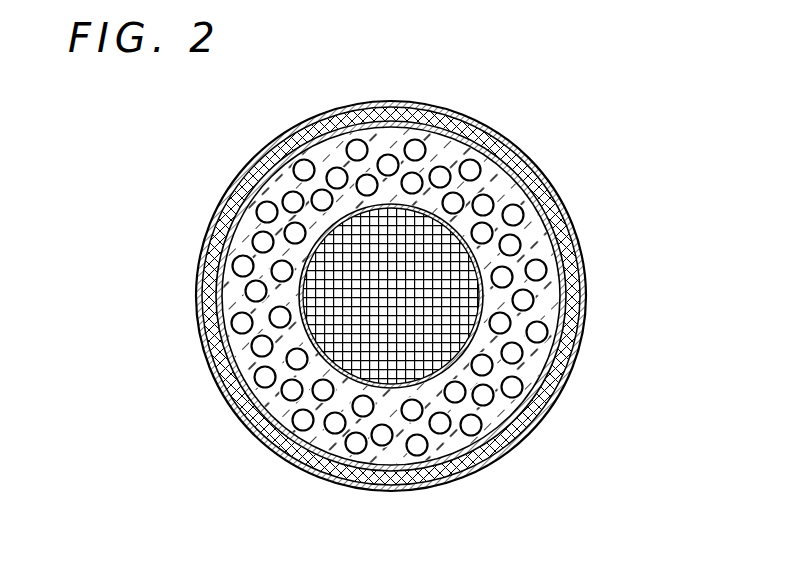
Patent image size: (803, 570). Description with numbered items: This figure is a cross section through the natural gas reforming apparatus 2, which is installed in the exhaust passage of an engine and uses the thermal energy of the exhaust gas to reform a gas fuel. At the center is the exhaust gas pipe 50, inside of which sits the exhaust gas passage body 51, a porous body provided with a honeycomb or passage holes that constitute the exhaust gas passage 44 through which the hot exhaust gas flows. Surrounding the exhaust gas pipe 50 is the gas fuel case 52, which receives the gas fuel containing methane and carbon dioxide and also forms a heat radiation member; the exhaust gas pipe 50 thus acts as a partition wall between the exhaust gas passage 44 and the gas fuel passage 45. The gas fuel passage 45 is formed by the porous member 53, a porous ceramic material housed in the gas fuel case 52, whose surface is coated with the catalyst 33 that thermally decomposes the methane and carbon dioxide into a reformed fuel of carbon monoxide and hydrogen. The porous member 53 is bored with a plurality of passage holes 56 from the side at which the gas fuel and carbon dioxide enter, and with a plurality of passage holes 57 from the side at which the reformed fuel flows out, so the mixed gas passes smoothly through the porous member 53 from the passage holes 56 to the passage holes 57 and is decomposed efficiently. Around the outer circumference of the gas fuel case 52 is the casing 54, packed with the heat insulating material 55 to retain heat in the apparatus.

The natural gas reforming apparatus 2 is at (575, 192).
The catalyst 33 is at (563, 293).
The exhaust gas passage 44 is at (340, 318).
The gas fuel passage 45 is at (398, 440).
The exhaust gas pipe 50 is at (500, 397).
The exhaust gas passage body 51 is at (348, 260).
The gas fuel case 52 is at (480, 463).
The porous member 53 is at (417, 105).
The casing 54 is at (270, 448).
The heat insulating material 55 is at (213, 231).
The passage holes 56 is at (514, 213).
The passage holes 57 is at (388, 165).